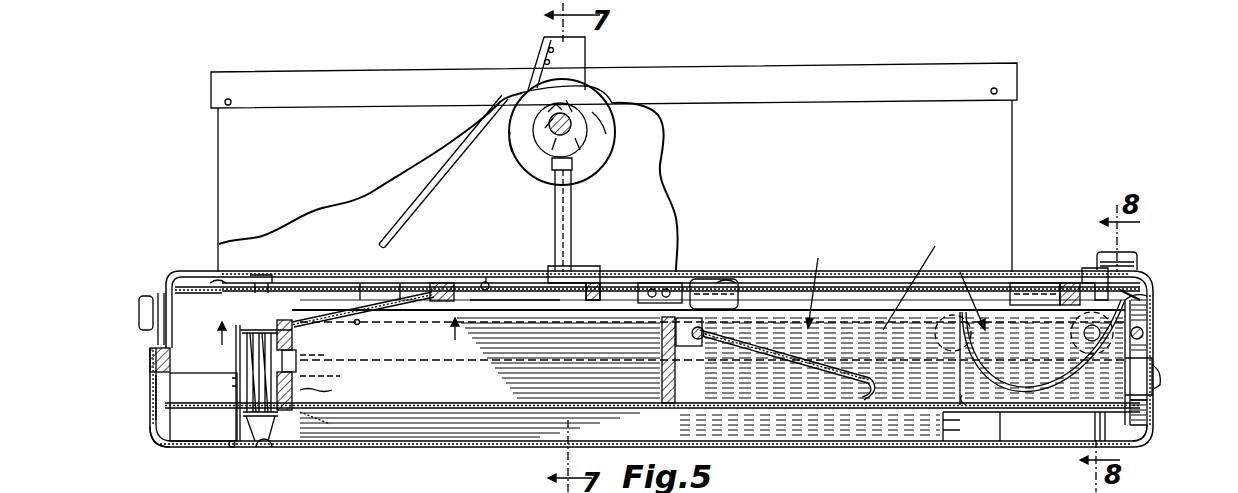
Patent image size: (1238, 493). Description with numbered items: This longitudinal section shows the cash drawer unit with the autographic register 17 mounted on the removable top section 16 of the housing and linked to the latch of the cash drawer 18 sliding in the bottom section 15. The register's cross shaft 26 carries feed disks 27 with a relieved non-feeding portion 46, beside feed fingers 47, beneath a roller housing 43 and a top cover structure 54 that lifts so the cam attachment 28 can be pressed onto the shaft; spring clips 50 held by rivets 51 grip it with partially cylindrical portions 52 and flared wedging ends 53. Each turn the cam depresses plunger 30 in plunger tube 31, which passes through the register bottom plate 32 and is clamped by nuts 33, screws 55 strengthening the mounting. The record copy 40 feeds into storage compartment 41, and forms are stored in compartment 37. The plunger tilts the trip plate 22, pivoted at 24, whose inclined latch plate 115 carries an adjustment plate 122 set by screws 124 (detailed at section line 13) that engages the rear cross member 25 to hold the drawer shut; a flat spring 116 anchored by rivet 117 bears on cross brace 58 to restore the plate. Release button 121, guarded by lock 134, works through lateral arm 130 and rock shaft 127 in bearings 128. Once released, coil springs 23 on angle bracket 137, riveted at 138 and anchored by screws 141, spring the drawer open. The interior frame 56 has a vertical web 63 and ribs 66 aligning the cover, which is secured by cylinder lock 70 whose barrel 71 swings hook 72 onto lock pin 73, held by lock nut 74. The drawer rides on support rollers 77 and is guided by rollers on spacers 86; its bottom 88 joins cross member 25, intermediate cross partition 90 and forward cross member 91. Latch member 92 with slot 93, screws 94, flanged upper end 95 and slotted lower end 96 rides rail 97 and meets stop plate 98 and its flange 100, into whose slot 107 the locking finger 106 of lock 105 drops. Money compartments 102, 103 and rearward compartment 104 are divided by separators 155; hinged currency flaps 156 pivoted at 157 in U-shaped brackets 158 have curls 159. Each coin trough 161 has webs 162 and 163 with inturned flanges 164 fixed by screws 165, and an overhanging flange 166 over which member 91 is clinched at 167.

The section line 13 is at (322, 338).
The bottom section 15 is at (389, 447).
The removable top section 16 is at (980, 283).
The autographic register 17 is at (1018, 116).
The cash drawer 18 is at (883, 330).
The trip plate 22 is at (631, 288).
The coil springs 23 is at (266, 449).
The pivotal mounting 24 is at (480, 300).
The rear cross member 25 is at (284, 320).
The cross shaft 26 is at (572, 120).
The feed disks 27 is at (616, 130).
The cam attachment 28 is at (545, 128).
The plunger 30 is at (585, 163).
The plunger tube 31 is at (572, 210).
The bottom plate 32 is at (487, 277).
The nuts 33 is at (536, 272).
The storage compartment 37 is at (988, 176).
The continuous record copy 40 is at (430, 192).
The storage compartment 41 is at (340, 218).
The roller housing 43 is at (586, 52).
The relieved non-feeding portion 46 is at (512, 152).
The feed fingers 47 is at (598, 94).
The spring clips 50 is at (551, 112).
The rivets 51 is at (566, 100).
The partially cylindrical portions 52 is at (608, 112).
The flared ends 53 is at (552, 150).
The top cover structure 54 is at (866, 78).
The screws 55 is at (264, 282).
The interior frame 56 is at (155, 432).
The cross braces 58 is at (728, 278).
The vertical web 63 is at (226, 424).
The vertical ribs 66 is at (153, 384).
The cylinder lock 70 is at (146, 296).
The rotatable barrel 71 is at (162, 292).
The hook 72 is at (178, 298).
The lock pin 73 is at (152, 352).
The lock nut 74 is at (164, 292).
The drawer support rollers 77 is at (935, 336).
The spacer 86 is at (1094, 428).
The bottom 88 is at (810, 403).
The intermediate cross partition 90 is at (686, 405).
The forward cross member 91 is at (1130, 318).
The latch member 92 is at (312, 355).
The elongated slot 93 is at (335, 376).
The screws 94 is at (314, 390).
The flanged upper end 95 is at (322, 316).
The slot 96 is at (310, 447).
The rail 97 is at (515, 438).
The stop plate 98 is at (948, 441).
The flange 100 is at (996, 441).
The coin compartment 102 is at (961, 288).
The money compartment 103 is at (819, 282).
The rearward drawer compartment 104 is at (594, 283).
The cylinder lock 105 is at (1160, 372).
The locking finger 106 is at (1150, 441).
The slot 107 is at (1150, 414).
The latch plate 115 is at (360, 283).
The flat spring 116 is at (400, 283).
The rivet 117 is at (482, 282).
The manual release button 121 is at (1128, 256).
The adjustment plate 122 is at (359, 325).
The screws 124 is at (442, 283).
The rock shaft 127 is at (864, 290).
The bearings 128 is at (700, 281).
The lateral arm 130 is at (1090, 270).
The lock 134 is at (1140, 266).
The angle bracket 137 is at (245, 412).
The rivets 138 is at (236, 449).
The screws 141 is at (236, 380).
The separators 155 is at (852, 283).
The hinged currency flap 156 is at (858, 369).
The pivot 157 is at (704, 340).
The U-shaped bracket 158 is at (735, 318).
The curl 159 is at (877, 373).
The partially cylindrical trough 161 is at (1044, 394).
The vertical web 162 is at (960, 376).
The forward vertical web 163 is at (1142, 338).
The inturned flange 164 is at (985, 414).
The screws 165 is at (960, 392).
The overhanging flange 166 is at (1150, 296).
The clinched portion 167 is at (1150, 284).